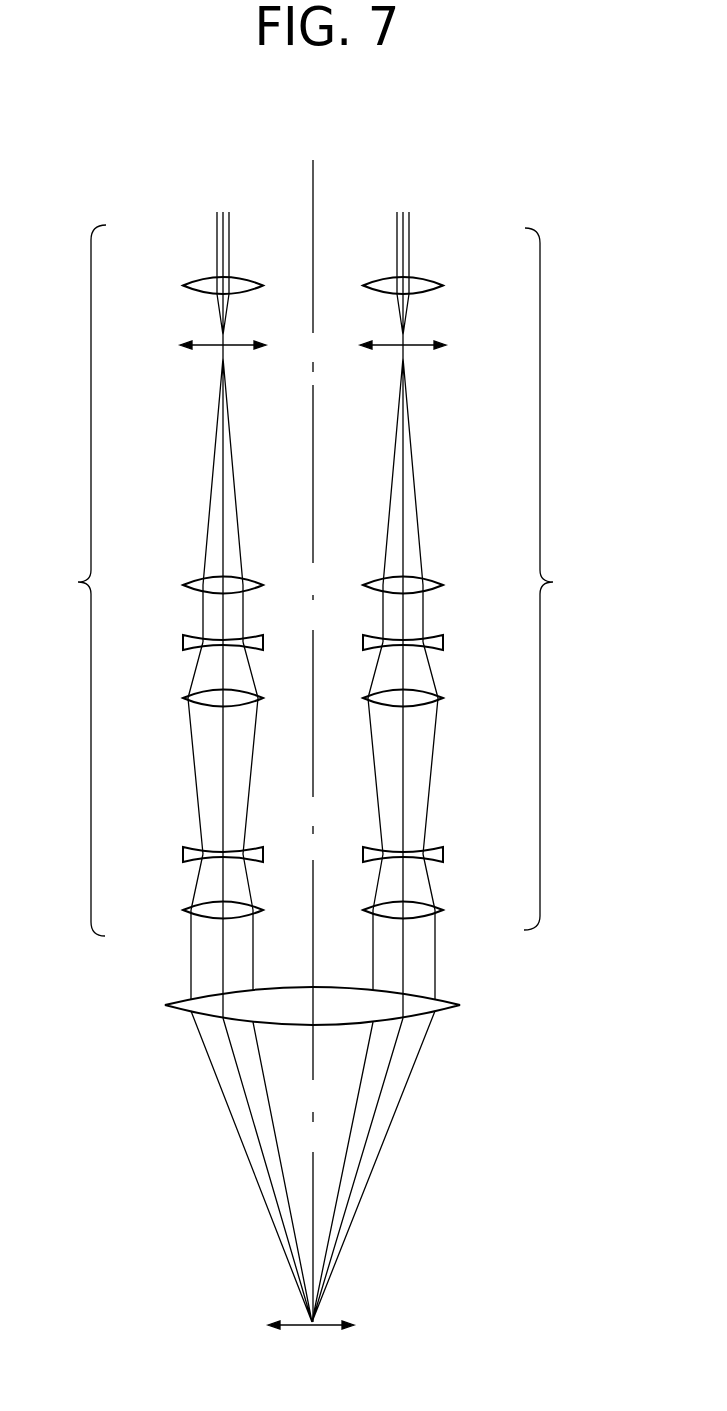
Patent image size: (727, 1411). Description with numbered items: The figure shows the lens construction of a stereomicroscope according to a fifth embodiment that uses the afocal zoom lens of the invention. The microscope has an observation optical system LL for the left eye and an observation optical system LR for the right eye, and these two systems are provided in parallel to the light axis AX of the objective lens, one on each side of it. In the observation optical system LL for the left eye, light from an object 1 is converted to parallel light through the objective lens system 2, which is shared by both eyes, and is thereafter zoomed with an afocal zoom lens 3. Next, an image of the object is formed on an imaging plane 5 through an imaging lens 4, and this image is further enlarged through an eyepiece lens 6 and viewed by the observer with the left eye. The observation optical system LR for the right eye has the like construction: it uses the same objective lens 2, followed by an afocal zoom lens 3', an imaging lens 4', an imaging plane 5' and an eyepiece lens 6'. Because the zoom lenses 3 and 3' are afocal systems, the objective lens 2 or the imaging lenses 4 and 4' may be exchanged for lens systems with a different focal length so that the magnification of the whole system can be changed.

The object 1 is at (294, 1322).
The objective lens system 2 is at (165, 1003).
The afocal zoom lens 3 is at (186, 765).
The afocal zoom lens 3' is at (441, 764).
The imaging lens 4 is at (194, 561).
The imaging lens 4' is at (430, 555).
The imaging plane 5 is at (194, 323).
The imaging plane 5' is at (436, 319).
The eyepiece lens 6 is at (192, 261).
The eyepiece lens 6' is at (438, 262).
The light axis AX is at (313, 200).
The observation optical system for the left eye LL is at (73, 580).
The observation optical system for the right eye LR is at (562, 579).